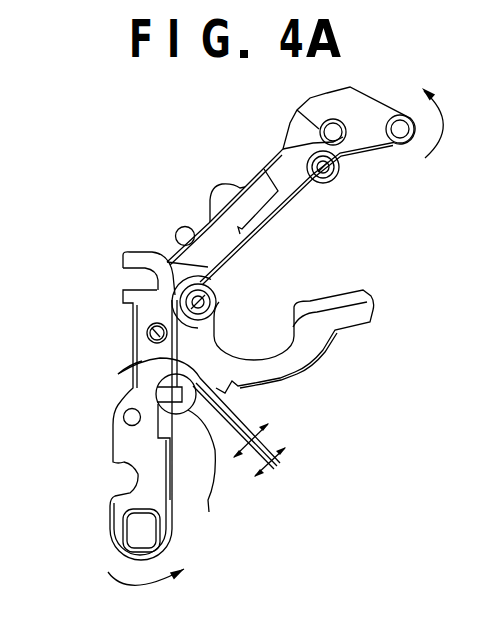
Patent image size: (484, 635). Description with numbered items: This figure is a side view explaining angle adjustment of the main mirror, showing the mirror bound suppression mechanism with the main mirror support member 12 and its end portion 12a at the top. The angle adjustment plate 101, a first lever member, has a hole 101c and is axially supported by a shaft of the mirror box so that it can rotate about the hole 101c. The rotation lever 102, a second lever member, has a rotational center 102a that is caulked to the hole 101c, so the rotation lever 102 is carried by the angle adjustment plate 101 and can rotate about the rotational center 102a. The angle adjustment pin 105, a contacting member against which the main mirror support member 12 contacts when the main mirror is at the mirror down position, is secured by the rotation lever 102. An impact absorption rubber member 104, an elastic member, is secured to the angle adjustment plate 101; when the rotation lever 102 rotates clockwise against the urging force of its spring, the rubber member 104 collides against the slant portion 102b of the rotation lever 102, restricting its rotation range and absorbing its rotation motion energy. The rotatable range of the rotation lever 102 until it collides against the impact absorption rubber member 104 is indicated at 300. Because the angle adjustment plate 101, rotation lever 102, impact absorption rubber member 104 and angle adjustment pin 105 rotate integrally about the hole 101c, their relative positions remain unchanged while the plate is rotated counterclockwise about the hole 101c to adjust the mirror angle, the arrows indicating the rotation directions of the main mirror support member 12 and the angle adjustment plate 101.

The main mirror support member 12 is at (262, 198).
The arm end portion 12a is at (402, 145).
The angle adjustment plate 101 is at (116, 470).
The hole 101c is at (117, 418).
The rotation lever 102 is at (307, 344).
The rotational center 102a is at (146, 331).
The slant portion 102b is at (118, 374).
The impact absorption rubber member 104 is at (212, 507).
The angle adjustment pin 105 is at (221, 295).
The rotatable range 300 is at (285, 449).